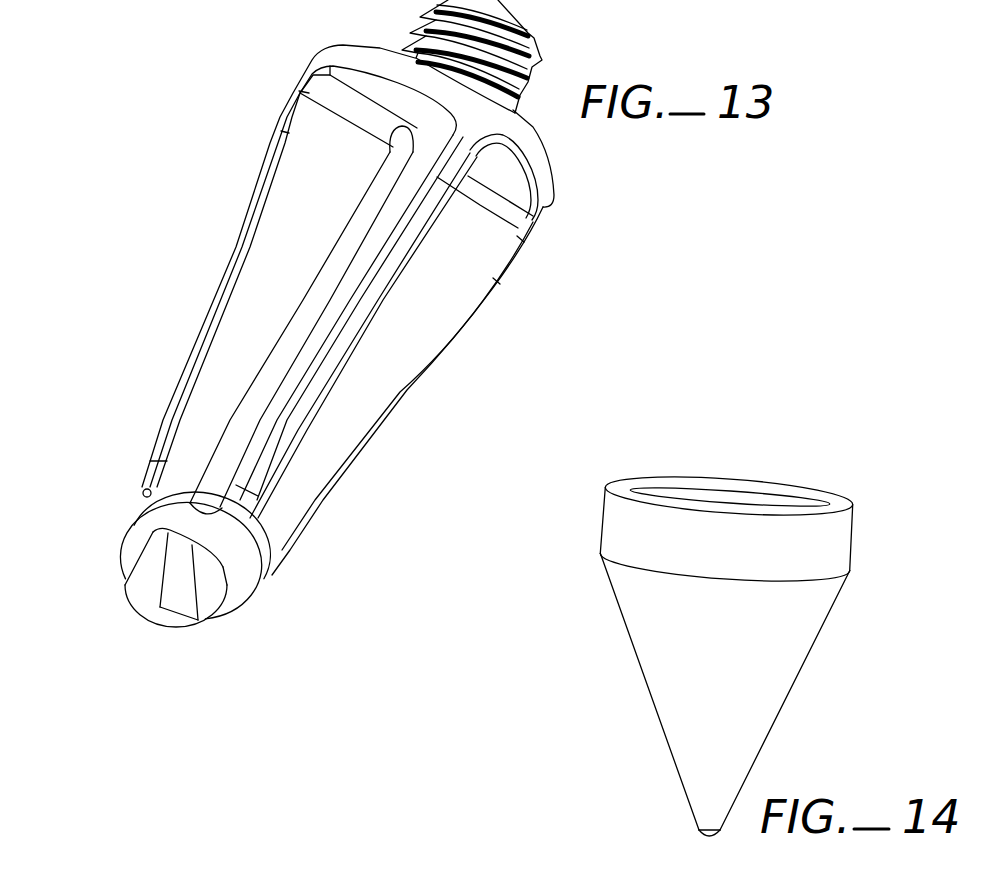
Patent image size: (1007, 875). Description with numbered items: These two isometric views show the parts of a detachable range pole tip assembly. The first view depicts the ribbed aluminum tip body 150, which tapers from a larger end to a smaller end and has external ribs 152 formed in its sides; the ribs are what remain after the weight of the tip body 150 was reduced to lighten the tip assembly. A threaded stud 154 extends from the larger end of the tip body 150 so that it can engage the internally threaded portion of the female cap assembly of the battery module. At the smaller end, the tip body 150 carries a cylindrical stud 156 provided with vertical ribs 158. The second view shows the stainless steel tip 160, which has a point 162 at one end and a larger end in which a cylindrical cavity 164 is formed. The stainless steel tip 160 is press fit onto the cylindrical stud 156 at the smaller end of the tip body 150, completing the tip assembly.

In FIG. 13, the ribbed aluminum tip body 150 is at (541, 294).
In FIG. 13, the external ribs 152 is at (253, 198).
In FIG. 13, the threaded stud 154 is at (532, 48).
In FIG. 13, the cylindrical stud 156 is at (163, 606).
In FIG. 13, the vertical ribs 158 is at (133, 561).
In FIG. 14, the stainless steel tip 160 is at (842, 651).
In FIG. 14, the point 162 is at (698, 834).
In FIG. 14, the cylindrical cavity 164 is at (737, 497).